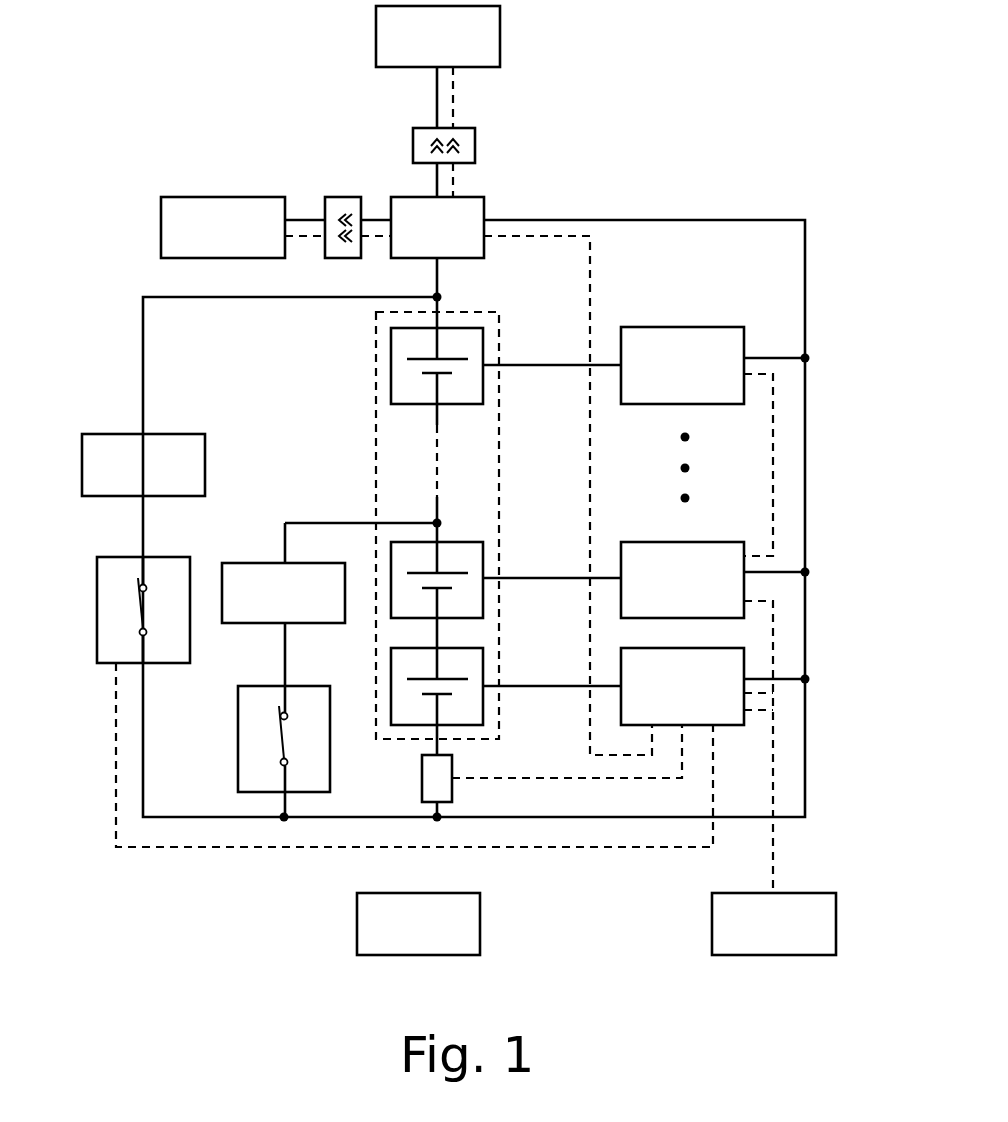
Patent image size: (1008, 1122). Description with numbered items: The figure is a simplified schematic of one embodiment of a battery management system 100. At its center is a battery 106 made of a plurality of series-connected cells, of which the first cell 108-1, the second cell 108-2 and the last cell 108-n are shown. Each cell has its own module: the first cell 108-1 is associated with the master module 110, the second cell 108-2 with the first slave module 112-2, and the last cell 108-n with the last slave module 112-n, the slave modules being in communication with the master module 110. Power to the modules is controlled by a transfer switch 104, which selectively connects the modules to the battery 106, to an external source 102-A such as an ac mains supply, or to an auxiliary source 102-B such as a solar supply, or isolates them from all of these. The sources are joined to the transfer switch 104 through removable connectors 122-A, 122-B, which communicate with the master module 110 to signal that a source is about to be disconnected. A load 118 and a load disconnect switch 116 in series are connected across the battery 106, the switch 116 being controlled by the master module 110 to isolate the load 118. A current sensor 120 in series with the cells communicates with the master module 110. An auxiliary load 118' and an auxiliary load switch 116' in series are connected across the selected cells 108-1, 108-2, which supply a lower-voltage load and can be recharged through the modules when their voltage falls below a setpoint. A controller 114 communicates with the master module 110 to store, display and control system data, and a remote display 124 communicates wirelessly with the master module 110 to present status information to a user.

The battery management system 100 is at (776, 72).
The external source 102-A is at (201, 197).
The auxiliary source 102-B is at (500, 36).
The transfer switch 104 is at (401, 197).
The battery 106 is at (499, 432).
The last cell 108-n is at (483, 345).
The second cell 108-2 is at (483, 553).
The first cell 108-1 is at (483, 660).
The master module 110 is at (744, 665).
The last slave module 112-n is at (683, 327).
The first slave module 112-2 is at (645, 542).
The controller 114 is at (712, 930).
The load disconnect switch 116 is at (131, 585).
The auxiliary load switch 116' is at (248, 739).
The load 118 is at (138, 433).
The auxiliary load 118' is at (279, 560).
The current sensor 120 is at (422, 783).
The connector 122-A is at (333, 197).
The connector 122-B is at (475, 140).
The remote display 124 is at (357, 930).